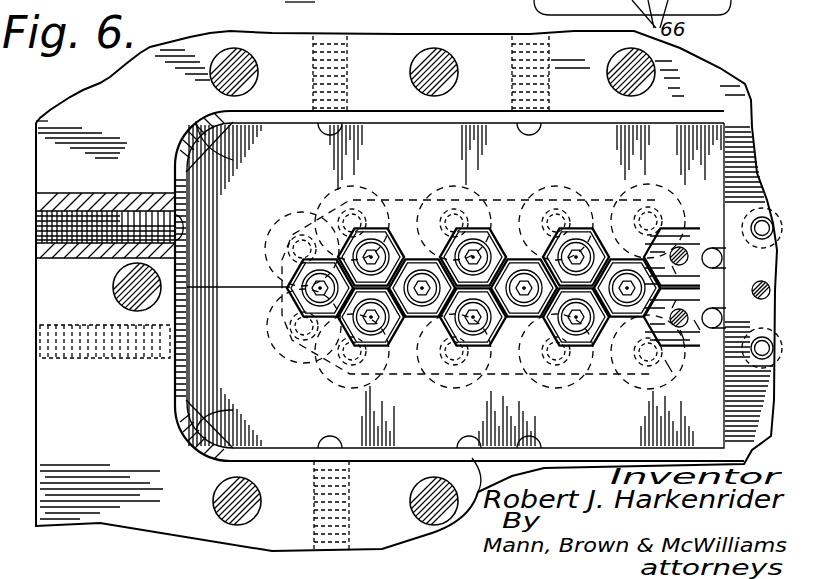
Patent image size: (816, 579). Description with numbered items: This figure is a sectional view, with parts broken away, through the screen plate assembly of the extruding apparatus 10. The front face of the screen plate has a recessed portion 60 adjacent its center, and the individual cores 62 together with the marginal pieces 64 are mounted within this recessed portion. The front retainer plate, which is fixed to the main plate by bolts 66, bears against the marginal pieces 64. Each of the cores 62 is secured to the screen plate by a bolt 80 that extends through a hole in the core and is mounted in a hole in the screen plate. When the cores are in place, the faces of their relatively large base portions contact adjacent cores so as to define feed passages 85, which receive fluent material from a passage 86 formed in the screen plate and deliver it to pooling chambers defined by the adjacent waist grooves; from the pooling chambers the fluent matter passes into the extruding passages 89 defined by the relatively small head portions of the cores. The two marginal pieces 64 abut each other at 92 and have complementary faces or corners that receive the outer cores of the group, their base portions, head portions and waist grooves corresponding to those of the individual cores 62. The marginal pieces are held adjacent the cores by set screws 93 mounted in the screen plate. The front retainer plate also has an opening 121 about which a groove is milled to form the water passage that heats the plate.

The engine 10 is at (264, 7).
The recessed portion 60 is at (720, 115).
The individual cores 62 is at (499, 213).
The marginal pieces 64 is at (196, 121).
The bolts 66 is at (412, 80).
The bolts 80 is at (589, 216).
The feed passages 85 is at (364, 213).
The passage 86 is at (723, 250).
The extruding passages 89 is at (390, 226).
The abutment 92 is at (226, 300).
The set screws 93 is at (168, 161).
The opening 121 is at (459, 505).